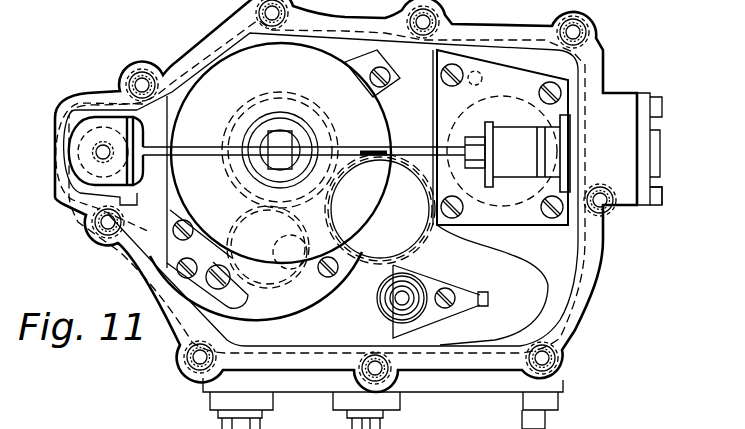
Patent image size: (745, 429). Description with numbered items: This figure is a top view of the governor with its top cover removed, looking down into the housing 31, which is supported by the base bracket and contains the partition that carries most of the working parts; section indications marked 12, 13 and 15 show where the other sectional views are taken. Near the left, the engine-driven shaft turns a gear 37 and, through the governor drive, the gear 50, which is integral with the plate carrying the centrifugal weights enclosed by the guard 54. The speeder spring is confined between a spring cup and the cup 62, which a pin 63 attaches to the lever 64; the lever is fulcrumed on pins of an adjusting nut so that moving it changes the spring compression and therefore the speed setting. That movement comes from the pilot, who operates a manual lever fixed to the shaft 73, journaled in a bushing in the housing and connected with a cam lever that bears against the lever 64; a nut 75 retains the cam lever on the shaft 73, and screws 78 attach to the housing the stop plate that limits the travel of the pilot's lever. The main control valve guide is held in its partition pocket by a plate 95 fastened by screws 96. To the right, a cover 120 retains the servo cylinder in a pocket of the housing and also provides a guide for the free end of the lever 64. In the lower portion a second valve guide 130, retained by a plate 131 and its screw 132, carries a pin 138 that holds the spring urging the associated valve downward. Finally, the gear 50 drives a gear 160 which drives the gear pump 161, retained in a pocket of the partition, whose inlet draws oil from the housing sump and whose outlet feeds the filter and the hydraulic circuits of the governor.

The section line 12- 12 is at (356, 278).
The section line 13- 13 is at (621, 311).
The section line 15- 15 is at (699, 136).
The housing 31 is at (604, 278).
The gear 37 is at (423, 240).
The gear 50 is at (318, 130).
The guard 54 is at (358, 222).
The cup 62 is at (287, 182).
The pin 63 is at (330, 141).
The lever 64 is at (405, 147).
The shaft 73 is at (478, 140).
The nut 75 is at (483, 128).
The screws 78 is at (662, 200).
The plate 95 is at (393, 65).
The screws 96 is at (387, 83).
The cover 120 is at (532, 222).
The valve guide 130 is at (420, 310).
The plate 131 is at (472, 293).
The screw 132 is at (455, 306).
The pin 138 is at (410, 410).
The gear 160 is at (233, 232).
The gear pump 161 is at (288, 303).